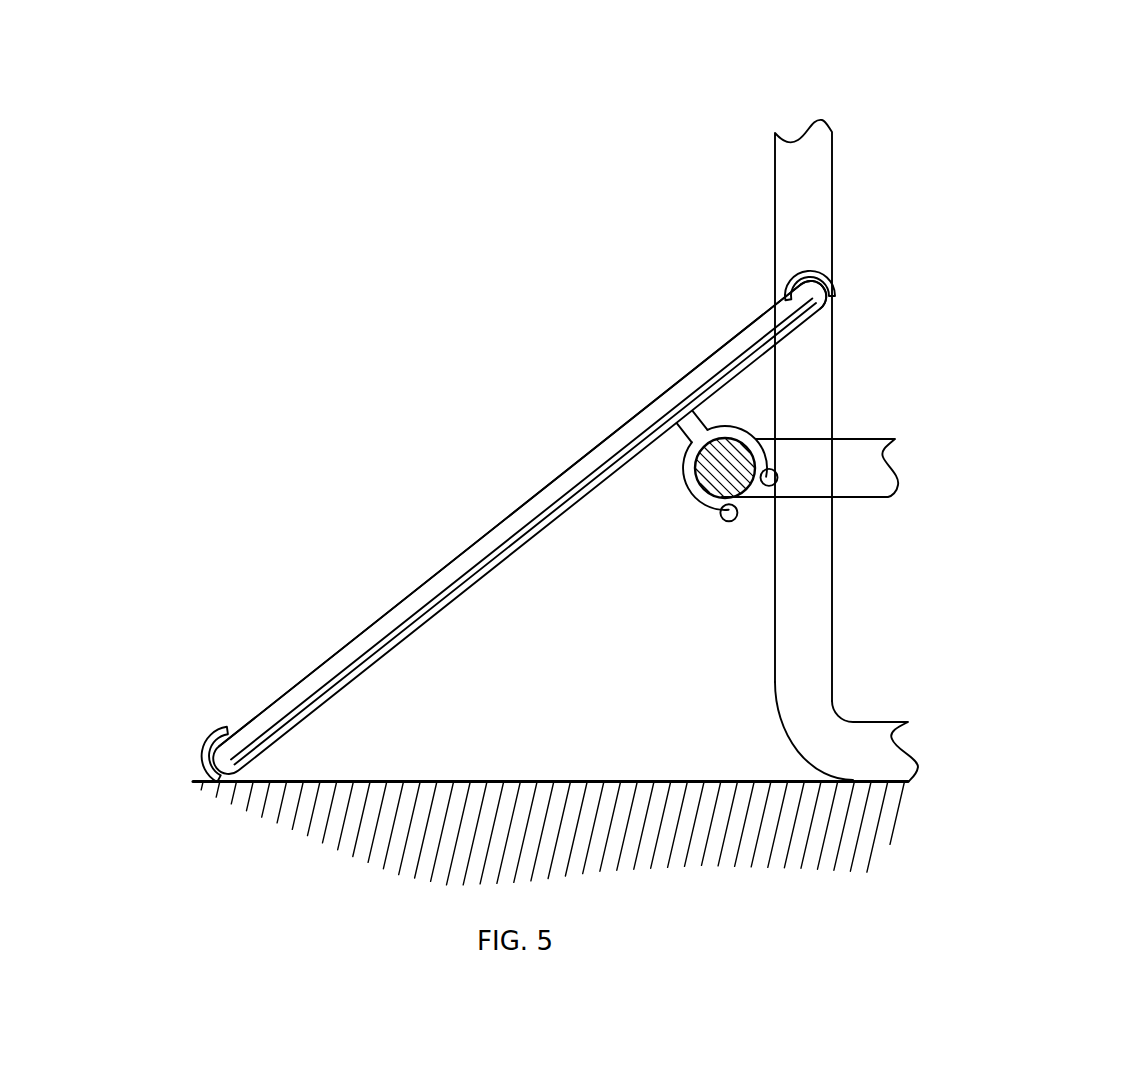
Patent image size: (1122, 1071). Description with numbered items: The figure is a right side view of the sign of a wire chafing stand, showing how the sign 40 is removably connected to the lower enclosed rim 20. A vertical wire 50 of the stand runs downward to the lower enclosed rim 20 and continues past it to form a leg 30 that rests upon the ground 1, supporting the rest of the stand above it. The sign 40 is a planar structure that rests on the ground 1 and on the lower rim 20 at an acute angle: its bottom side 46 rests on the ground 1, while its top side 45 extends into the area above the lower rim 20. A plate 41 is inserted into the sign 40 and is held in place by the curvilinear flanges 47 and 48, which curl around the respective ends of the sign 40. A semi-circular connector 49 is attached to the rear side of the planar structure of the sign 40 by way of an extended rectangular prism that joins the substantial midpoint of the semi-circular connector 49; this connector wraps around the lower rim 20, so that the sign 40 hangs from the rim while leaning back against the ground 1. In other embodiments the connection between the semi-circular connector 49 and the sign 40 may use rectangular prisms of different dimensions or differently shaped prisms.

The ground 1 is at (900, 815).
The lower enclosed rim 20 is at (855, 455).
The leg 30 is at (845, 729).
The sign 40 is at (600, 490).
The plate 41 is at (518, 523).
The top side 45 is at (830, 285).
The bottom side 46 is at (200, 781).
The curvilinear flange 47 is at (795, 277).
The curvilinear flange 48 is at (210, 740).
The semi-circular connector 49 is at (747, 438).
The vertical wire 50 is at (811, 165).